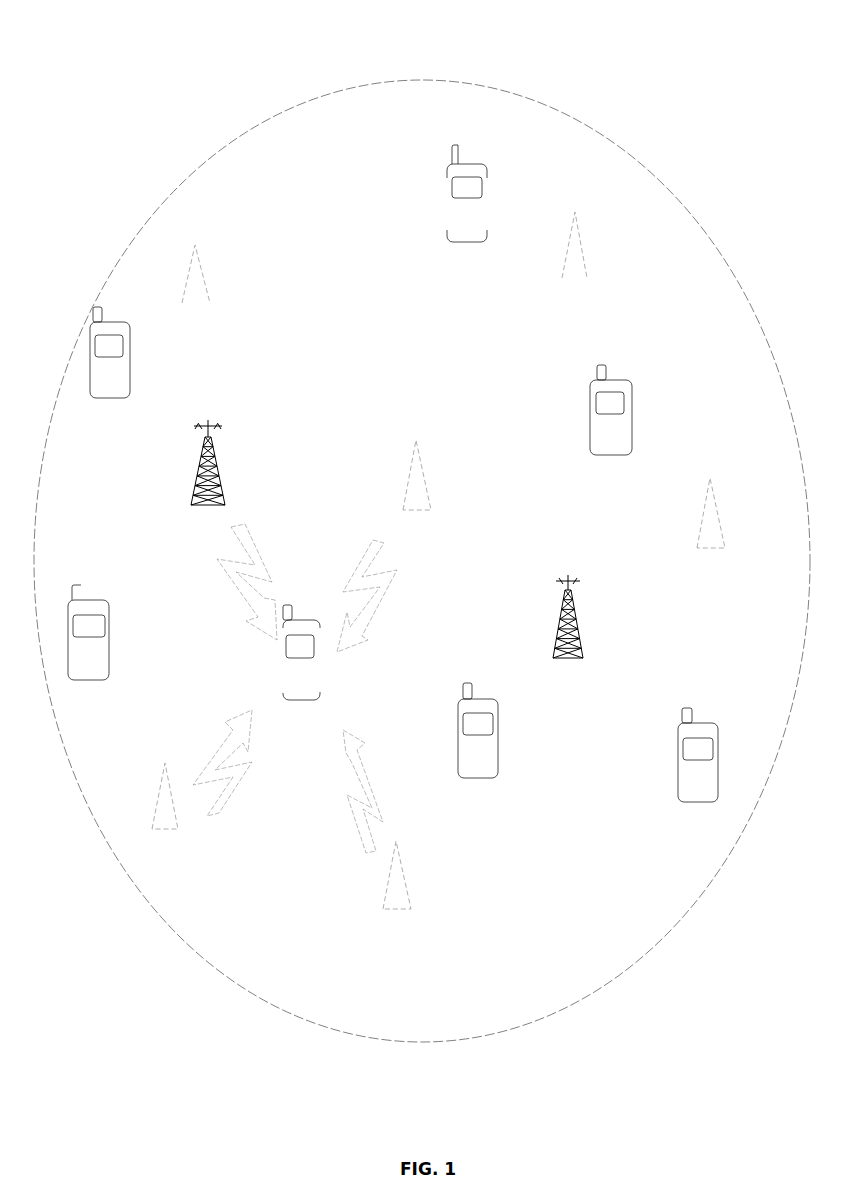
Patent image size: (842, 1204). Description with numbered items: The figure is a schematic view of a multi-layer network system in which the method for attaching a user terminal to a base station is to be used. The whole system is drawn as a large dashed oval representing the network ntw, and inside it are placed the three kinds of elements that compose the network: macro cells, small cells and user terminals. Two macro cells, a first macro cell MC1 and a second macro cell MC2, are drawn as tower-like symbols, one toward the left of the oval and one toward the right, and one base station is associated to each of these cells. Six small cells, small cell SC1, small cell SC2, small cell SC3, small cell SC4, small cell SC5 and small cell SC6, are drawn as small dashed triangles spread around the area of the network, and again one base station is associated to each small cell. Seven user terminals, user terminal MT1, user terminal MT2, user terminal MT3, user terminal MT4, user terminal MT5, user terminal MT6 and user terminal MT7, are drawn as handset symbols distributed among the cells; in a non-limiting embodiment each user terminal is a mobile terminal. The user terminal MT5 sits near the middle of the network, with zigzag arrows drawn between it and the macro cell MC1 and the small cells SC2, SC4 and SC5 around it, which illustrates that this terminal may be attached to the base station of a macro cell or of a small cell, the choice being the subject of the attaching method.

The network ntw is at (423, 80).
The user terminal MT1 is at (110, 374).
The user terminal MT2 is at (467, 213).
The user terminal MT3 is at (613, 433).
The user terminal MT4 is at (480, 752).
The user terminal MT5 is at (295, 688).
The user terminal MT6 is at (89, 654).
The user terminal MT7 is at (699, 777).
The macro cell MC1 is at (204, 480).
The macro cell MC2 is at (570, 632).
The small cell SC1 is at (196, 302).
The small cell SC2 is at (420, 499).
The small cell SC3 is at (708, 535).
The small cell SC4 is at (398, 897).
The small cell SC5 is at (165, 819).
The small cell SC6 is at (575, 268).